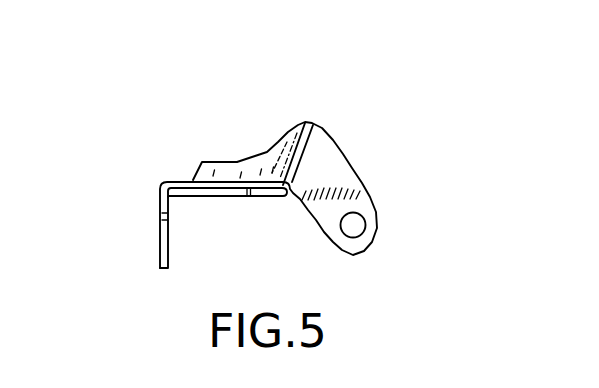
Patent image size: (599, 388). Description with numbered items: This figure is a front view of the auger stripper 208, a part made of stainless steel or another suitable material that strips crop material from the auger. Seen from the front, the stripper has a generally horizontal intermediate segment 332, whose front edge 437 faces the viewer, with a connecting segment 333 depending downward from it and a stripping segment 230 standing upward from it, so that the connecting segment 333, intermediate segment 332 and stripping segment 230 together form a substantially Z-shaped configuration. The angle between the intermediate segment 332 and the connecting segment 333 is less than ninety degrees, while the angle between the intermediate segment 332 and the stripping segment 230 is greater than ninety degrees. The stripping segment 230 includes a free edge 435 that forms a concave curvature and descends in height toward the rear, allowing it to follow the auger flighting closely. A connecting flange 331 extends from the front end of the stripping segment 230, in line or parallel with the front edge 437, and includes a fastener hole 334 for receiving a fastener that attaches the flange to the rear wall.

The auger stripper 208 is at (358, 95).
The stripping segment 230 is at (274, 166).
The connecting flange 331 is at (343, 180).
The intermediate segment 332 is at (220, 195).
The connecting segment 333 is at (160, 229).
The fastener hole 334 is at (357, 227).
The free edge 435 is at (240, 163).
The front edge 437 is at (231, 233).